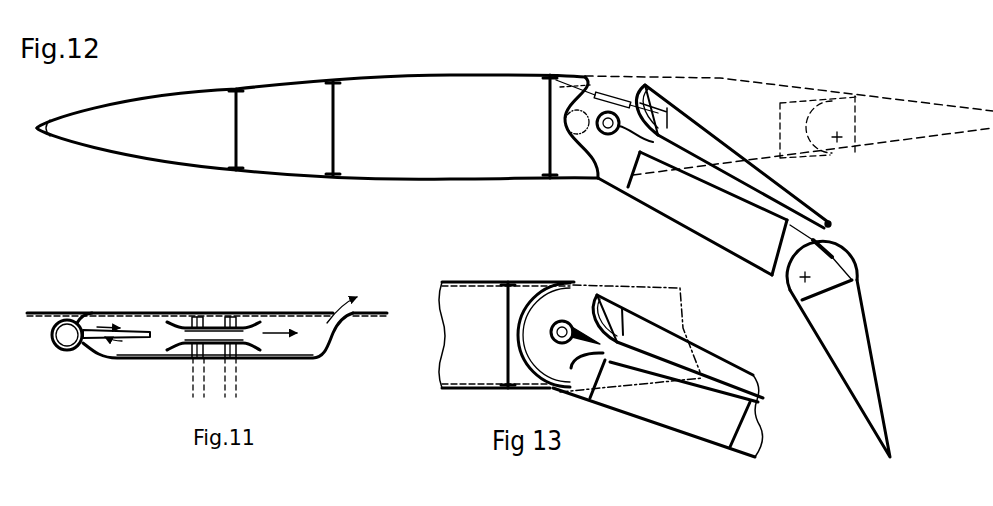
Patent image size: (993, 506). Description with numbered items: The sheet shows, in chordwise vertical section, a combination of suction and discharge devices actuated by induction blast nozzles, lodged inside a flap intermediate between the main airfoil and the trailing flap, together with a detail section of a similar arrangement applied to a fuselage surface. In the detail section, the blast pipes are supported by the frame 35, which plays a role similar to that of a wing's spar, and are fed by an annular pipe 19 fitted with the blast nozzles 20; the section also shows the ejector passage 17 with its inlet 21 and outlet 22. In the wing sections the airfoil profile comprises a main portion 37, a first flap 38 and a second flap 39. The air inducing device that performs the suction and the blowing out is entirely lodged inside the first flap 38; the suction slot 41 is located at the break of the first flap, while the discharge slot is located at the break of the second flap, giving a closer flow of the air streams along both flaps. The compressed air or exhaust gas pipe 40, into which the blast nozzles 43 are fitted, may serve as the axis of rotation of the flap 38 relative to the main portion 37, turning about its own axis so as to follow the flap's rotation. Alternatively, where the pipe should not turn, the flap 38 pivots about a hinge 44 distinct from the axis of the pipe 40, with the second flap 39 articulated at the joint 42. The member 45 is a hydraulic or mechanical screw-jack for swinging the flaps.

In FIG. 11, the venturi ejector tube 17 is at (167, 345).
In FIG. 11, the annular pipe 19 is at (67, 350).
In FIG. 11, the blast nozzles 20 is at (110, 349).
In FIG. 11, the slot inlet 21 is at (90, 320).
In FIG. 11, the slot outlet 22 is at (234, 319).
In FIG. 11, the frame 35 is at (222, 315).
In FIG. 12, the main portion 37 is at (317, 127).
In FIG. 13, the main portion 37 is at (506, 335).
In FIG. 12, the first flap 38 is at (713, 180).
In FIG. 13, the first flap 38 is at (658, 376).
In FIG. 12, the second flap 39 is at (838, 348).
In FIG. 12, the compressed air or exhaust gas pipe 40 is at (606, 131).
In FIG. 13, the compressed air or exhaust gas pipe 40 is at (568, 343).
In FIG. 12, the suction slot 41 is at (612, 77).
In FIG. 13, the suction slot 41 is at (584, 292).
In FIG. 12, the hinge 42 is at (838, 222).
In FIG. 12, the blast nozzles 43 is at (648, 143).
In FIG. 12, the hinge 44 is at (593, 180).
In FIG. 13, the hinge 44 is at (560, 335).
In FIG. 12, the screw-jack 45 is at (625, 92).